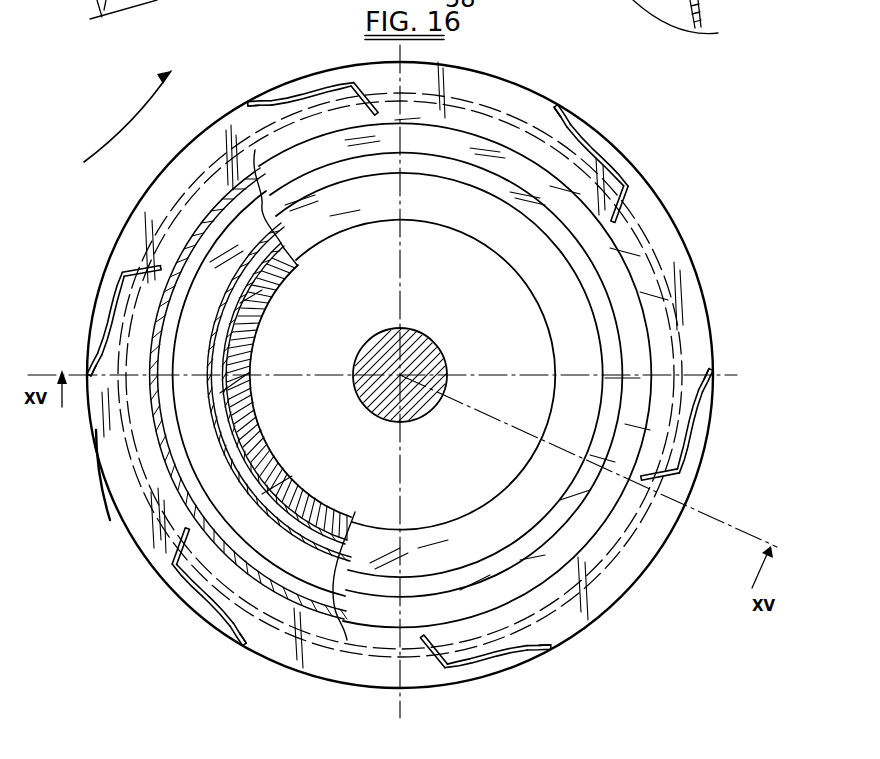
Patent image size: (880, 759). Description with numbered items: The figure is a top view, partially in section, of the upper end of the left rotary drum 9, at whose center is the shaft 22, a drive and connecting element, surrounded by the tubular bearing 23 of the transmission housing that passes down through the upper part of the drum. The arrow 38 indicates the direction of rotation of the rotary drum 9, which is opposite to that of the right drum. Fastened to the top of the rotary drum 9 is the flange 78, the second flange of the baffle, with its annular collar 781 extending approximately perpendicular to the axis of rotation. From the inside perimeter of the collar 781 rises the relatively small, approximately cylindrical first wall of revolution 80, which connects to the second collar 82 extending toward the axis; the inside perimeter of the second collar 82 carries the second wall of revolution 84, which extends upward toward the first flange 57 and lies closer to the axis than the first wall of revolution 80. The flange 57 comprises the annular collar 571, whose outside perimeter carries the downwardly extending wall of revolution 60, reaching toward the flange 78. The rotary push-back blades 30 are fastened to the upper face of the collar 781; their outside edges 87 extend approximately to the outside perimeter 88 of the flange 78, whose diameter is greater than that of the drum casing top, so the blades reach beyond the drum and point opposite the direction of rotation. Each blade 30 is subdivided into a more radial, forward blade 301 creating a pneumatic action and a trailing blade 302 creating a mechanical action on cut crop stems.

The rotary drum 9 is at (627, 533).
The shaft 22 is at (390, 337).
The tubular bearing 23 is at (300, 504).
The rotary push-back blade 30 is at (325, 83).
The rotary push-back blade 301 is at (388, 90).
The rotary push-back blade 302 is at (280, 90).
The arrow 38 is at (113, 120).
The flange 57 is at (625, 252).
The collar 571 is at (633, 330).
The wall of revolution 60 is at (202, 224).
The flange 78 is at (98, 469).
The collar 781 is at (132, 487).
The first wall of revolution 80 is at (284, 250).
The second collar 82 is at (190, 327).
The second wall of revolution 84 is at (220, 437).
The outside edge 87 is at (247, 104).
The outside perimeter 88 is at (166, 176).